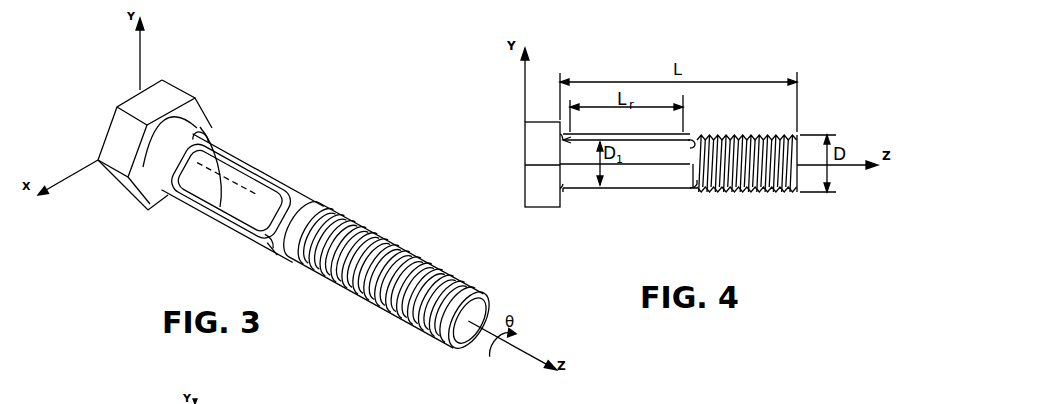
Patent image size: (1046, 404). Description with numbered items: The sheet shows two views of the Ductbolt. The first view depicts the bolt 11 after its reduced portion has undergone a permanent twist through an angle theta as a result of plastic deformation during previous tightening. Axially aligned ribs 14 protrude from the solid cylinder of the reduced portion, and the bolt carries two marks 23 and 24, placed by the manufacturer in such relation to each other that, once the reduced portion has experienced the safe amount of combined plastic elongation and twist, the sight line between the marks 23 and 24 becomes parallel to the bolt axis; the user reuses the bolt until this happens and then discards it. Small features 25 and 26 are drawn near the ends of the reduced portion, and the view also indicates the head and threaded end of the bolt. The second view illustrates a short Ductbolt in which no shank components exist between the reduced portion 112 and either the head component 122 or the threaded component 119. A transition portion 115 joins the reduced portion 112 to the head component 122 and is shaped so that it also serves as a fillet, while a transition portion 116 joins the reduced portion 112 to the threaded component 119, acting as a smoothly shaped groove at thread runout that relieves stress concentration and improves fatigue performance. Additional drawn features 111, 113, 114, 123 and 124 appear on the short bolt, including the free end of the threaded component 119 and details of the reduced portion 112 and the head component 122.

In FIG. 3, the bolt 11 is at (452, 325).
In FIG. 3, the ribs 14 is at (200, 195).
In FIG. 3, the mark 23 is at (182, 155).
In FIG. 3, the mark 24 is at (283, 210).
In FIG. 3, the tab at slot end 25 is at (191, 127).
In FIG. 3, the slot end wall 26 is at (280, 258).
In FIG. 4, the free end of threaded shank 111 is at (798, 175).
In FIG. 4, the reduced portion 112 is at (624, 134).
In FIG. 4, the reduced diameter section 113 is at (618, 176).
In FIG. 4, the slot 114 is at (646, 165).
In FIG. 4, the transition portion 115 is at (564, 190).
In FIG. 4, the transition portion 116 is at (692, 190).
In FIG. 4, the threaded component 119 is at (743, 192).
In FIG. 4, the head component 122 is at (525, 180).
In FIG. 4, the notch at head 123 is at (562, 142).
In FIG. 4, the lip at thread end of slot 124 is at (694, 134).